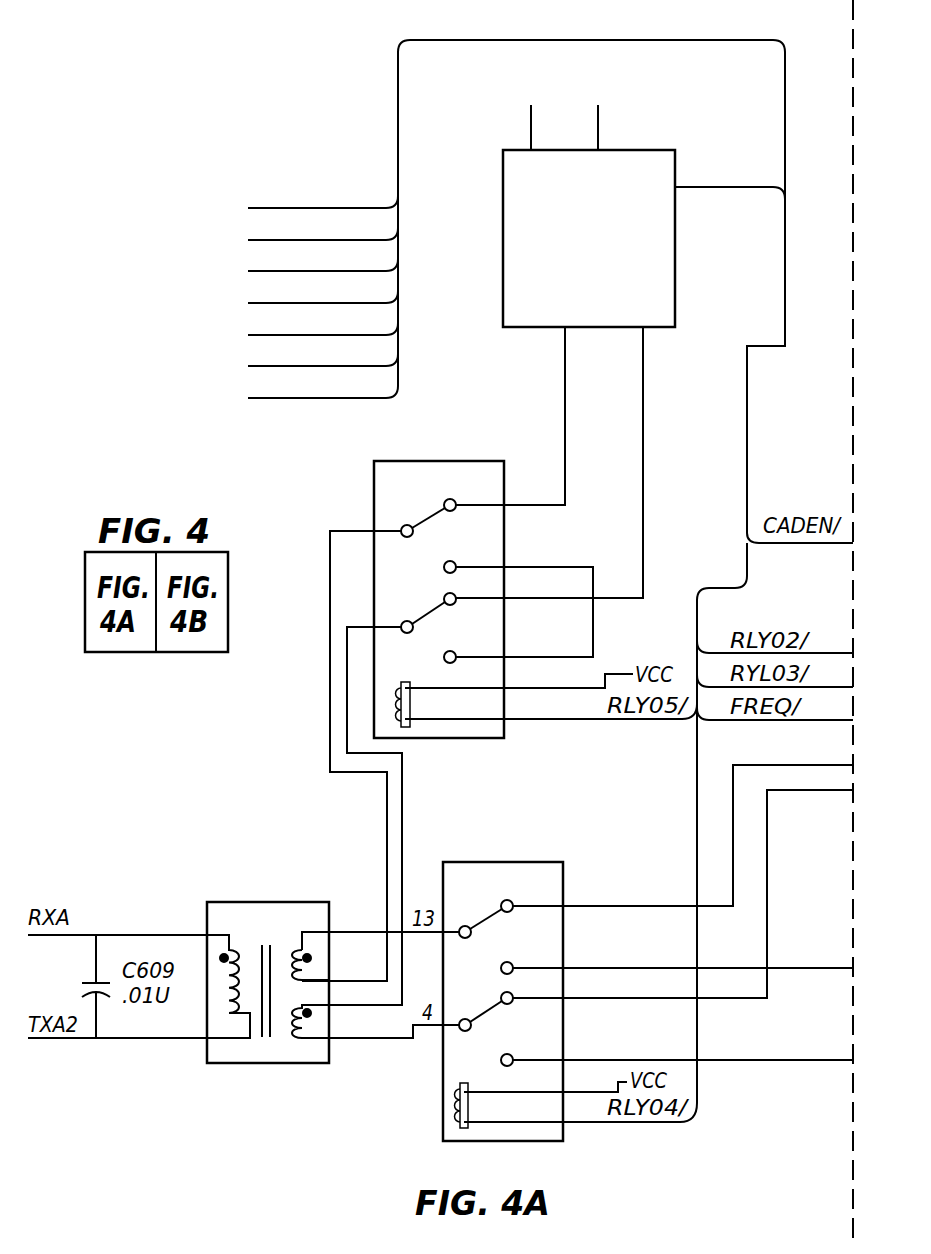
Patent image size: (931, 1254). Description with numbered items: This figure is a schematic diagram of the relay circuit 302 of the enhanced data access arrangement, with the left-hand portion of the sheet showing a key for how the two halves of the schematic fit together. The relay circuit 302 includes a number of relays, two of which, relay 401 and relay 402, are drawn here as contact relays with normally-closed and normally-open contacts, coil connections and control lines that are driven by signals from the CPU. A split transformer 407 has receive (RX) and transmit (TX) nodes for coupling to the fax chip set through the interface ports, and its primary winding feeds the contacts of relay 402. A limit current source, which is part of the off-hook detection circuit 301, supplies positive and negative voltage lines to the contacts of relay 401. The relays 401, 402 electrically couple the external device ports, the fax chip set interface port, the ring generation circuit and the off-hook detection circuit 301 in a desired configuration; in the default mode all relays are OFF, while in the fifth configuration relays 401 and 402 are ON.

The relay circuit 302 is at (108, 248).
The off-hook detection circuit 301 is at (530, 328).
The relay 401 is at (467, 739).
The relay 402 is at (535, 1142).
The split transformer 407 is at (298, 1064).